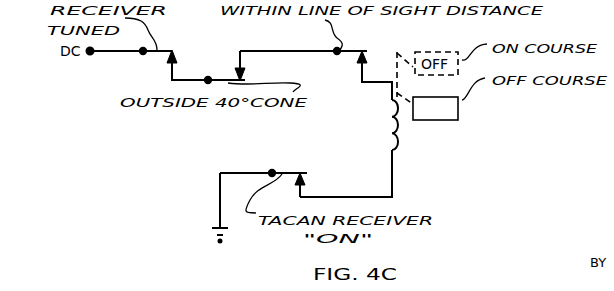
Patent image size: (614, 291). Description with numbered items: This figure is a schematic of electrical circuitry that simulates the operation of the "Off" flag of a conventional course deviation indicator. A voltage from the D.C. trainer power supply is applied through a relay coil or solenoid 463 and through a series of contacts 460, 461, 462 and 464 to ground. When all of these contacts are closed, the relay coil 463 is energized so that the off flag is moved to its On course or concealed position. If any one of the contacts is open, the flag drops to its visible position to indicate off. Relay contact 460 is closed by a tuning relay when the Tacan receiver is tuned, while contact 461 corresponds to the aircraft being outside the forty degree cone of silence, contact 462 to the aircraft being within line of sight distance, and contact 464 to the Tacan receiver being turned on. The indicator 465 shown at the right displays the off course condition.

The relay contact 460 is at (133, 64).
The contact 461 is at (212, 78).
The contact 462 is at (338, 54).
The relay coil or solenoid 463 is at (392, 122).
The contact 464 is at (288, 172).
The OFF course indicator 465 is at (460, 108).